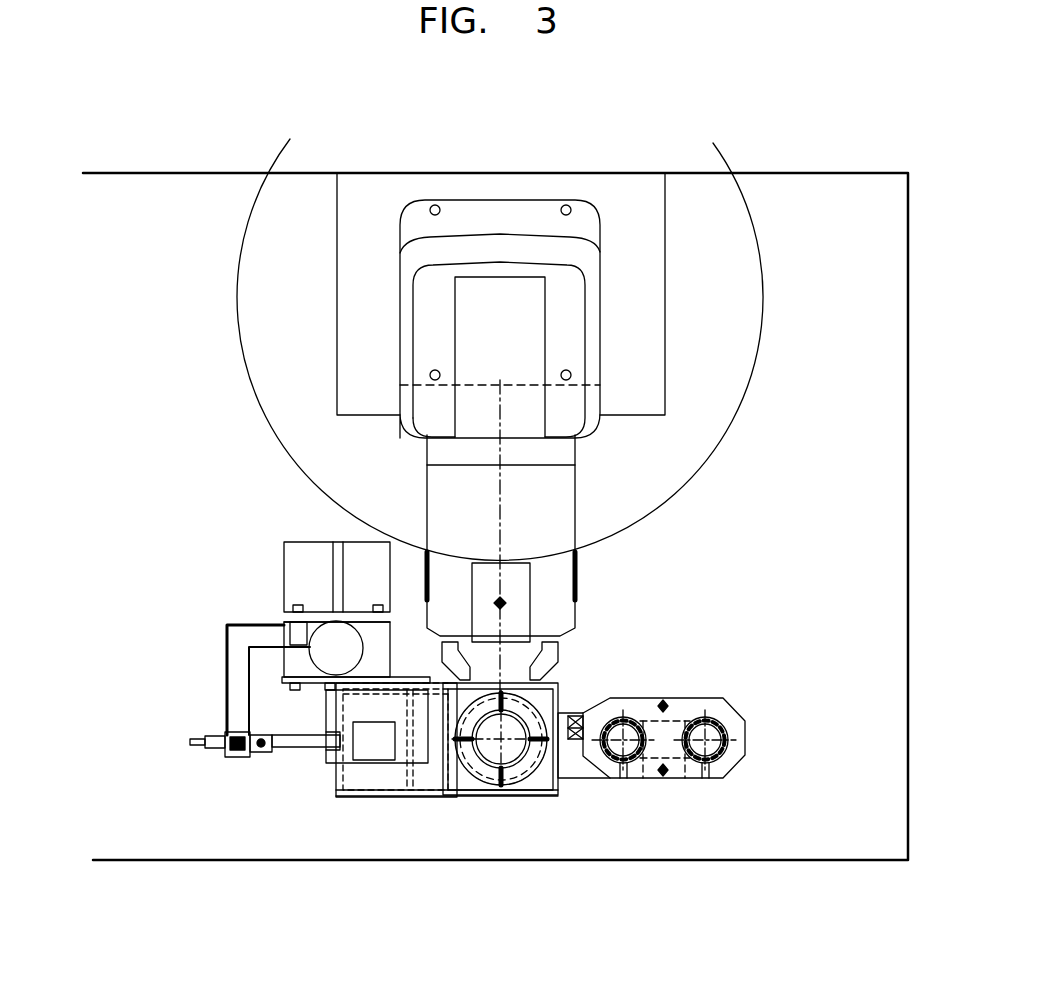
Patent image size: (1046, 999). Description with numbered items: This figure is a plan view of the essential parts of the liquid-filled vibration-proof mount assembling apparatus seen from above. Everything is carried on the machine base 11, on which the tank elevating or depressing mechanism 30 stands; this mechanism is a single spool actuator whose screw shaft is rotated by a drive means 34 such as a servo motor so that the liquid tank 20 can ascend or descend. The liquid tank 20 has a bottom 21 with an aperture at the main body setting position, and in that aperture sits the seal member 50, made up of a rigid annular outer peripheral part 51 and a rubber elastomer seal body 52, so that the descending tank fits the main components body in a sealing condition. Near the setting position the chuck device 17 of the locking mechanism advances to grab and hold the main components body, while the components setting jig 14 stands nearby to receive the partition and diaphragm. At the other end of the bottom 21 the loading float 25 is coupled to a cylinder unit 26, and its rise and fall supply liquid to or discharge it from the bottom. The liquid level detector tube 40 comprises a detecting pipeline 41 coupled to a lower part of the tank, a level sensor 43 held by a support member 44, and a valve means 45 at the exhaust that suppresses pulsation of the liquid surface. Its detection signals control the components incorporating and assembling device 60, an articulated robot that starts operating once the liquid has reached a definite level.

The machine base 11 is at (826, 838).
The components setting jig 14 is at (676, 780).
The chuck device 17 is at (558, 653).
The liquid tank 20 is at (538, 808).
The bottom 21 is at (457, 790).
The loading float 25 is at (385, 778).
The cylinder unit 26 is at (370, 747).
The tank elevating or depressing mechanism 30 is at (262, 602).
The drive means 34 is at (332, 640).
The liquid level detector tube 40 is at (219, 766).
The detecting pipeline 41 is at (262, 752).
The level sensor 43 is at (213, 748).
The support member 44 is at (233, 663).
The valve means 45 is at (243, 757).
The seal member 50 is at (480, 778).
The outer peripheral part 51 is at (530, 712).
The seal body 52 is at (508, 778).
The components incorporating and assembling device 60 is at (583, 500).